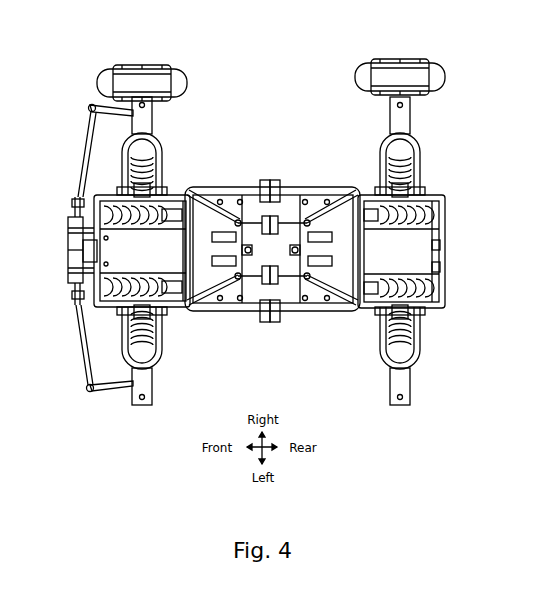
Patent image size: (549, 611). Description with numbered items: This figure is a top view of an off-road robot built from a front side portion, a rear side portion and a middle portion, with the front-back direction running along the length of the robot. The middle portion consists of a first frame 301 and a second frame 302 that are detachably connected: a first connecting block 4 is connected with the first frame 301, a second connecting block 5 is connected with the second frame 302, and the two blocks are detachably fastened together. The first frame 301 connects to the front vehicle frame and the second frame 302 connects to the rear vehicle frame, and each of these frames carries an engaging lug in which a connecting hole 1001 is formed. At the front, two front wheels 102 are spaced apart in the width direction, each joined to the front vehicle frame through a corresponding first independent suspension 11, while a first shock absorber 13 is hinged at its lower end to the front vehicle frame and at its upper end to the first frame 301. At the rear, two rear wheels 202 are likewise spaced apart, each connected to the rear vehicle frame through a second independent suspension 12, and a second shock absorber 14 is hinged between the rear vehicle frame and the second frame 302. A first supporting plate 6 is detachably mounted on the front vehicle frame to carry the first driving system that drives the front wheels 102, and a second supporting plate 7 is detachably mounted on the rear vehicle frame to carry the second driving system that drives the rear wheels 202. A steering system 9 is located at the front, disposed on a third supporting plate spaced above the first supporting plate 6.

The front wheels 102 is at (130, 67).
The rear wheels 202 is at (398, 72).
The first shock absorber 13 is at (125, 150).
The second shock absorber 14 is at (415, 143).
The first independent suspensions 11 is at (125, 347).
The second independent suspensions 12 is at (415, 343).
The steering system 9 is at (78, 250).
The first supporting plate 6 is at (80, 278).
The connecting hole 1001 is at (237, 187).
The first frame 301 is at (228, 187).
The second frame 302 is at (309, 187).
The first connecting block 4 is at (265, 182).
The second connecting block 5 is at (277, 182).
The second supporting plate 7 is at (412, 252).